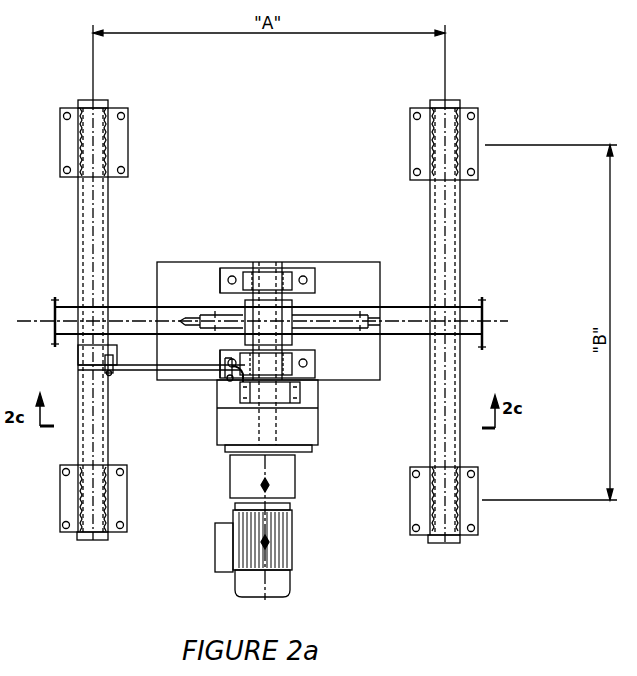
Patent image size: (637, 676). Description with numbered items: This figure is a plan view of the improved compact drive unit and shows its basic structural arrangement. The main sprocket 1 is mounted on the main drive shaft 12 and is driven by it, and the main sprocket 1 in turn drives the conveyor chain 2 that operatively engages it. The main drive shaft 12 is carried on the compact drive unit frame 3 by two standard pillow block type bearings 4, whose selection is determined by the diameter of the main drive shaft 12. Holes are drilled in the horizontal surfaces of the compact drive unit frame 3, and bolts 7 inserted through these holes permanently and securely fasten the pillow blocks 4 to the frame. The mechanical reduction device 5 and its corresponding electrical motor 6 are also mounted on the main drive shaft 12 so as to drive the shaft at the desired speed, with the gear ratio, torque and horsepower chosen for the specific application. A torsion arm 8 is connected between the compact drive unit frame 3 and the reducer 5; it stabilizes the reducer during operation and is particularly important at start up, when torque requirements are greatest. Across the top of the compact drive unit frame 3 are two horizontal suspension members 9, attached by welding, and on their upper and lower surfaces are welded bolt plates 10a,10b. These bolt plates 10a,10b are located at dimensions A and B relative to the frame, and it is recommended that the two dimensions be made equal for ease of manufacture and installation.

The main sprocket 1 is at (262, 311).
The conveyor chain 2 is at (495, 297).
The compact drive unit frame 3 is at (281, 342).
The pillow block type bearings 4 is at (183, 305).
The mechanical reduction device 5 is at (301, 439).
The electrical motor 6 is at (288, 539).
The bolts 7 is at (299, 316).
The torsion arm 8 is at (161, 386).
The horizontal suspension members 9 is at (301, 321).
The bolt plates 10a,10b is at (329, 324).
The main drive shaft 12 is at (334, 338).